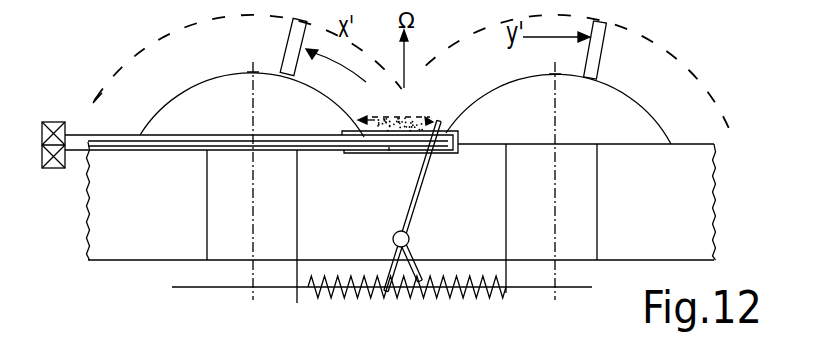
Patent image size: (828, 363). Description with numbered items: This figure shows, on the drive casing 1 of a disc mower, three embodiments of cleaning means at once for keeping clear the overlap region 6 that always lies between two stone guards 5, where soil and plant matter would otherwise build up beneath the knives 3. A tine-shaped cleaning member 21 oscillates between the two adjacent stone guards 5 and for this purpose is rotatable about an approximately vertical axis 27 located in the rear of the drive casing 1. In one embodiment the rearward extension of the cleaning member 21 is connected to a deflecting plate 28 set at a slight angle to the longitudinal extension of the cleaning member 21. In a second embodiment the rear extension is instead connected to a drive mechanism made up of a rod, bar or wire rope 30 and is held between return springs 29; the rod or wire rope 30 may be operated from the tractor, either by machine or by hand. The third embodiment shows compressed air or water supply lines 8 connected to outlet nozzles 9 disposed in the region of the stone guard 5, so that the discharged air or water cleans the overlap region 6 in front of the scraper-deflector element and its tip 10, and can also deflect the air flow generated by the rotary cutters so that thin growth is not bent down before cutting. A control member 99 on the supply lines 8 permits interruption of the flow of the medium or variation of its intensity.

The drive casing 1 is at (116, 254).
The knife 3 is at (288, 39).
The stone guard 5 is at (324, 109).
The overlap region 6 is at (390, 112).
The supply lines 8 is at (142, 151).
The outlet nozzles 9 is at (455, 130).
The tip 10 is at (389, 147).
The cleaning member 21 is at (436, 117).
The vertical axis 27 is at (393, 240).
The deflecting plate 28 is at (418, 258).
The return springs 29 is at (444, 292).
The rod or wire rope 30 is at (240, 288).
The control member 99 is at (52, 121).